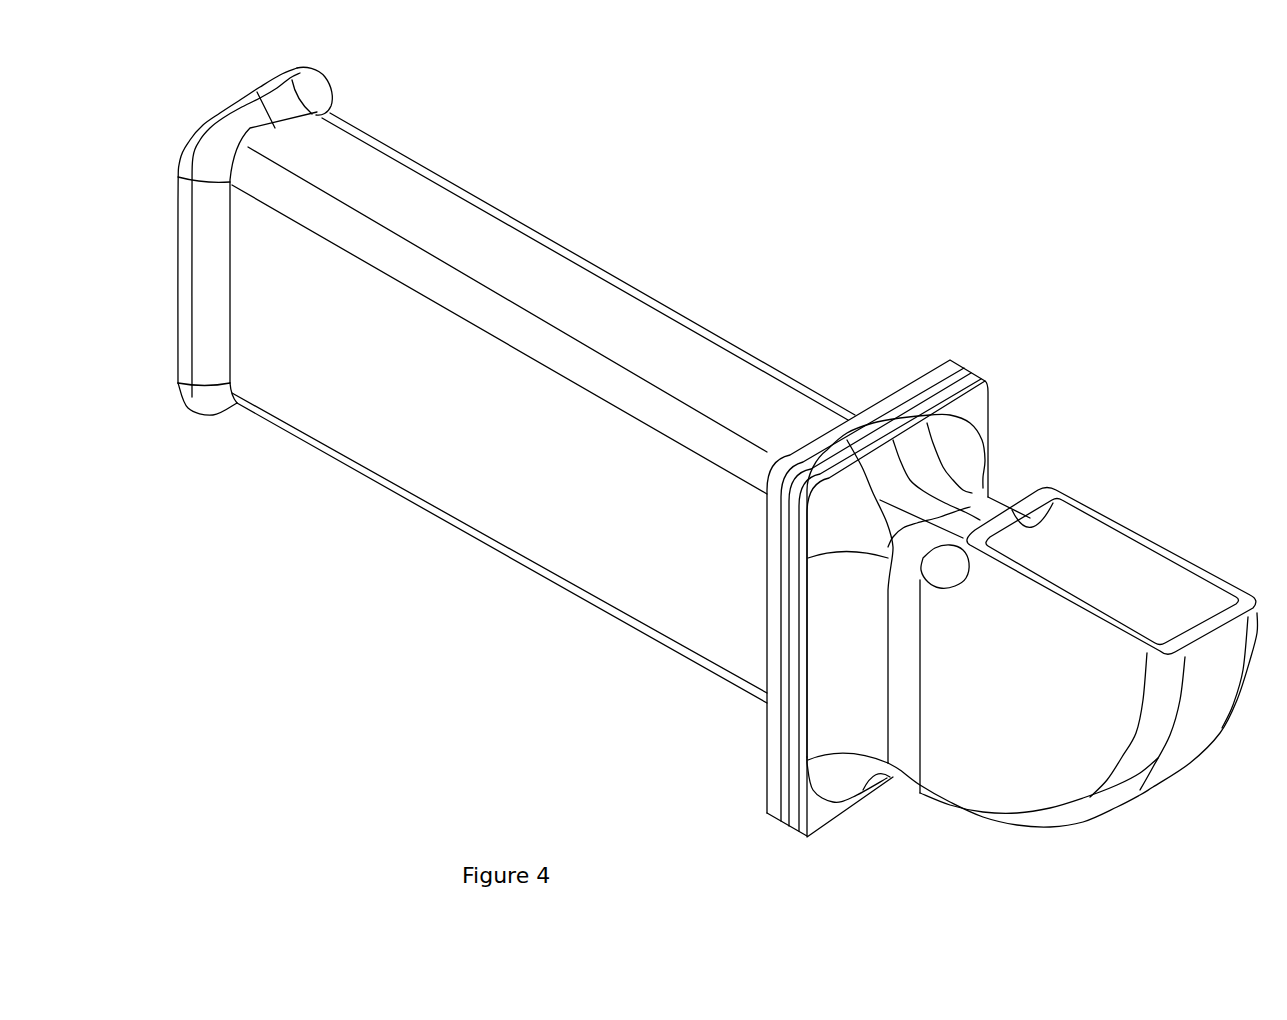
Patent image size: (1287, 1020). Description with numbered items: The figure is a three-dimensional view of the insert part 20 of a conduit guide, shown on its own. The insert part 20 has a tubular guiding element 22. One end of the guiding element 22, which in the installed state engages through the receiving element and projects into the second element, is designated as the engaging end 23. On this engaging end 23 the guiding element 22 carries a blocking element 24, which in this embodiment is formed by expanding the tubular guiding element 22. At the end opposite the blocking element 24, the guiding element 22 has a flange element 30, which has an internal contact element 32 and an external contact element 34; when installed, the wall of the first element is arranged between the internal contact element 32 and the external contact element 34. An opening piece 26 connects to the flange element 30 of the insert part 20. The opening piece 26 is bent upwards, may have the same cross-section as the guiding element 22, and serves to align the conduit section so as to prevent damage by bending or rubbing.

The insert part 20 is at (1009, 97).
The guiding element 22 is at (608, 317).
The engaging end 23 is at (391, 122).
The blocking element 24 is at (312, 90).
The opening piece 26 is at (1037, 772).
The flange element 30 is at (1025, 343).
The internal contact element 32 is at (793, 813).
The external contact element 34 is at (772, 807).